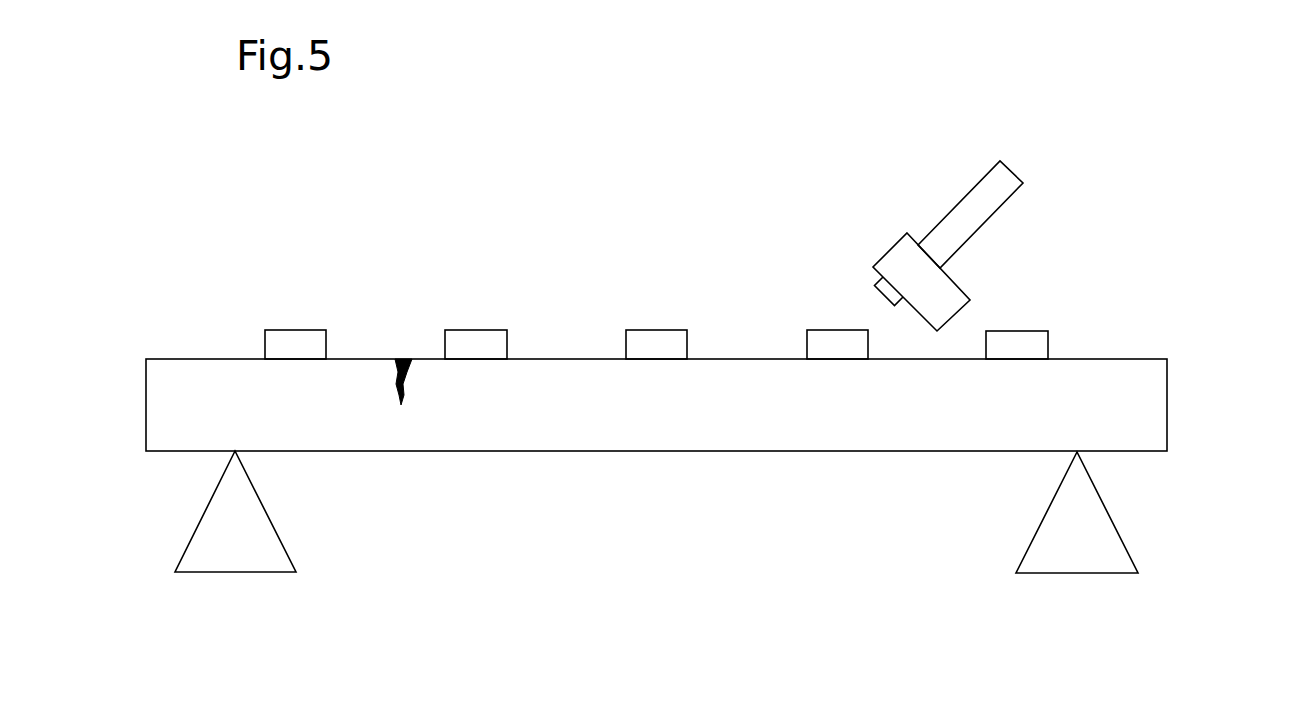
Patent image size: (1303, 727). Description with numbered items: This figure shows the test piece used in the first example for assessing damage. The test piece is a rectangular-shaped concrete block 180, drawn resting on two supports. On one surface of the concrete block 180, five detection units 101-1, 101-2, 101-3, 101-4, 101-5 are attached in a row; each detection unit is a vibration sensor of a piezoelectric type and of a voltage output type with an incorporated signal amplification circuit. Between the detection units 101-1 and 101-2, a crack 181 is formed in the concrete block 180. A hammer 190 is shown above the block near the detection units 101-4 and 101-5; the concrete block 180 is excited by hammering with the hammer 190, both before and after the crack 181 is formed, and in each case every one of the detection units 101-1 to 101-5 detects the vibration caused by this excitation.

The detection unit 101-1 is at (297, 329).
The detection unit 101-2 is at (477, 329).
The detection unit 101-3 is at (657, 329).
The detection unit 101-4 is at (838, 329).
The detection unit 101-5 is at (1072, 288).
The concrete block 180 is at (1168, 407).
The crack 181 is at (399, 357).
The hammer 190 is at (1023, 181).